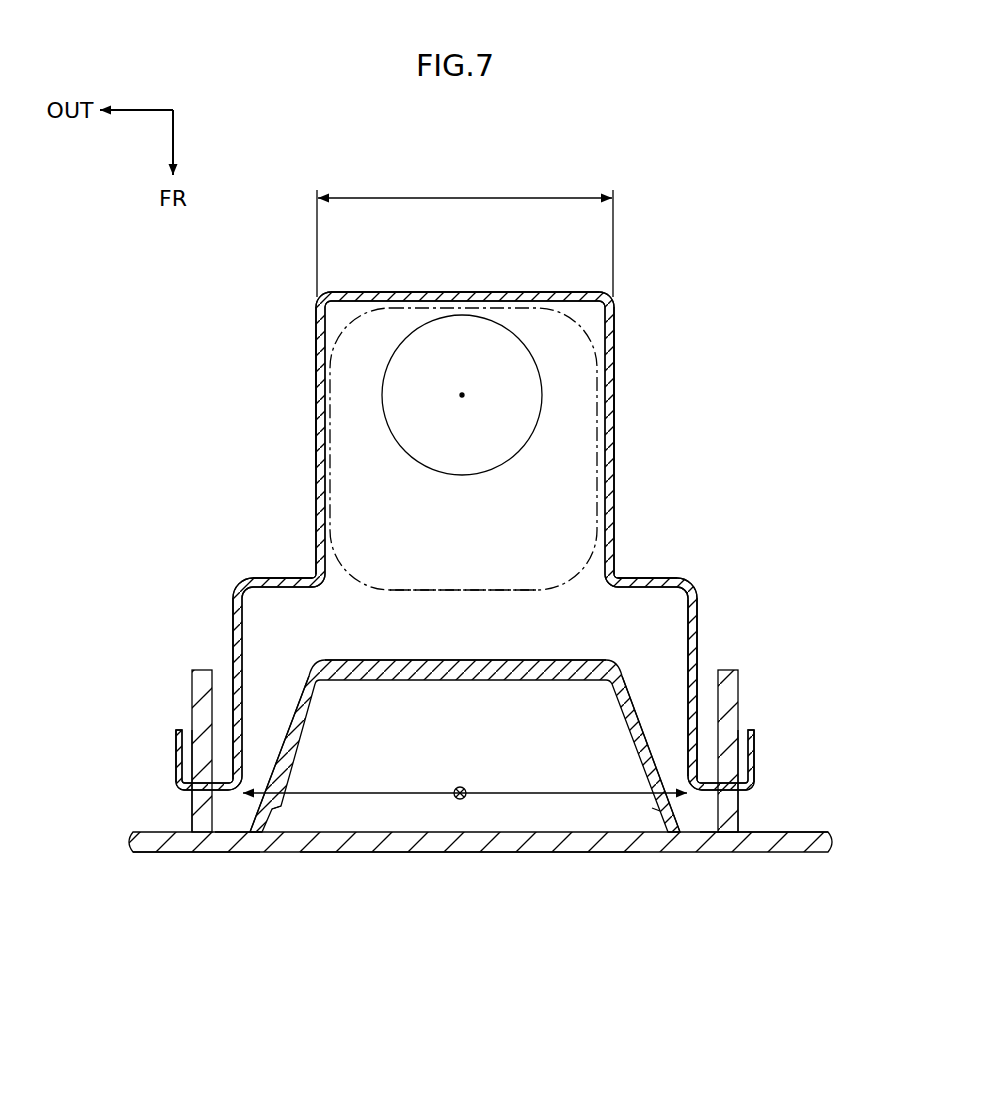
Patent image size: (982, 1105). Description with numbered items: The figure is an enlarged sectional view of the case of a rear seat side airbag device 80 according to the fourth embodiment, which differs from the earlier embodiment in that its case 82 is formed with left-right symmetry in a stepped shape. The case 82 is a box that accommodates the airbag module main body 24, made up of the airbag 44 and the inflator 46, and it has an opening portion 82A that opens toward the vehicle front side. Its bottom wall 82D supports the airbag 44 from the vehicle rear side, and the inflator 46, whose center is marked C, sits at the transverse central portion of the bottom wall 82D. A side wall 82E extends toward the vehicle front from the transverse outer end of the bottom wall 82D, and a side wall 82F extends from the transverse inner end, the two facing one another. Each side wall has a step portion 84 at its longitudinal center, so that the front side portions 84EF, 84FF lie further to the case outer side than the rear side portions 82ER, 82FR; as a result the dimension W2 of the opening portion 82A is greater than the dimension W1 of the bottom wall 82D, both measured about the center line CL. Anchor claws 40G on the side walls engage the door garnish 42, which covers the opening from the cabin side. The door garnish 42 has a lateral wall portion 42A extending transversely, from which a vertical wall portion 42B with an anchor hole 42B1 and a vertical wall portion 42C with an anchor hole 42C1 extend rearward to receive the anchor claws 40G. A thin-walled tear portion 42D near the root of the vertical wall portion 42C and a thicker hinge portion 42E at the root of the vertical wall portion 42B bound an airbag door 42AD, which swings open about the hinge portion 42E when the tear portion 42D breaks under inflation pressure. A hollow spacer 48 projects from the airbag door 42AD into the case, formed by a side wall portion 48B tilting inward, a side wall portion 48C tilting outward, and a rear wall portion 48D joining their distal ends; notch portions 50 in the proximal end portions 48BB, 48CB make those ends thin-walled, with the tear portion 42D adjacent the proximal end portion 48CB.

The rear seat side airbag device 80 is at (706, 252).
The case 82 is at (593, 289).
The bottom wall 82D is at (423, 292).
The side wall 82E is at (316, 450).
The vehicle rear side portion 82ER is at (316, 410).
The side wall 82F is at (614, 443).
The vehicle rear side portion 82FR is at (614, 388).
The opening portion 82A is at (682, 765).
The step portion 84 is at (262, 576).
The rear lower wall 84EF is at (236, 625).
The front lower wall 84FF is at (697, 618).
The anchor claw 40G is at (176, 745).
The airbag module main body 24 is at (590, 334).
The airbag 44 is at (546, 590).
The inflator 46 is at (485, 471).
The center of pipe C is at (462, 400).
The spacer 48 is at (430, 660).
The side wall portion 48B is at (291, 735).
The side wall portion 48C is at (646, 700).
The rear wall portion 48D is at (385, 660).
The proximal end portion 48BB is at (272, 834).
The proximal end portion 48CB is at (672, 836).
The notch portion 50 is at (279, 812).
The door garnish 42 is at (780, 854).
The lateral wall portion 42A is at (170, 852).
The airbag door 42AD is at (432, 852).
The tear portion 42D is at (705, 811).
The hinge portion 42E is at (230, 840).
The vertical wall portion 42B is at (198, 668).
The anchor hole 42B1 is at (190, 760).
The vertical wall portion 42C is at (732, 672).
The anchor hole 42C1 is at (742, 765).
The dimension W1 is at (412, 196).
The dimension W2 is at (398, 790).
The center line CL is at (463, 786).